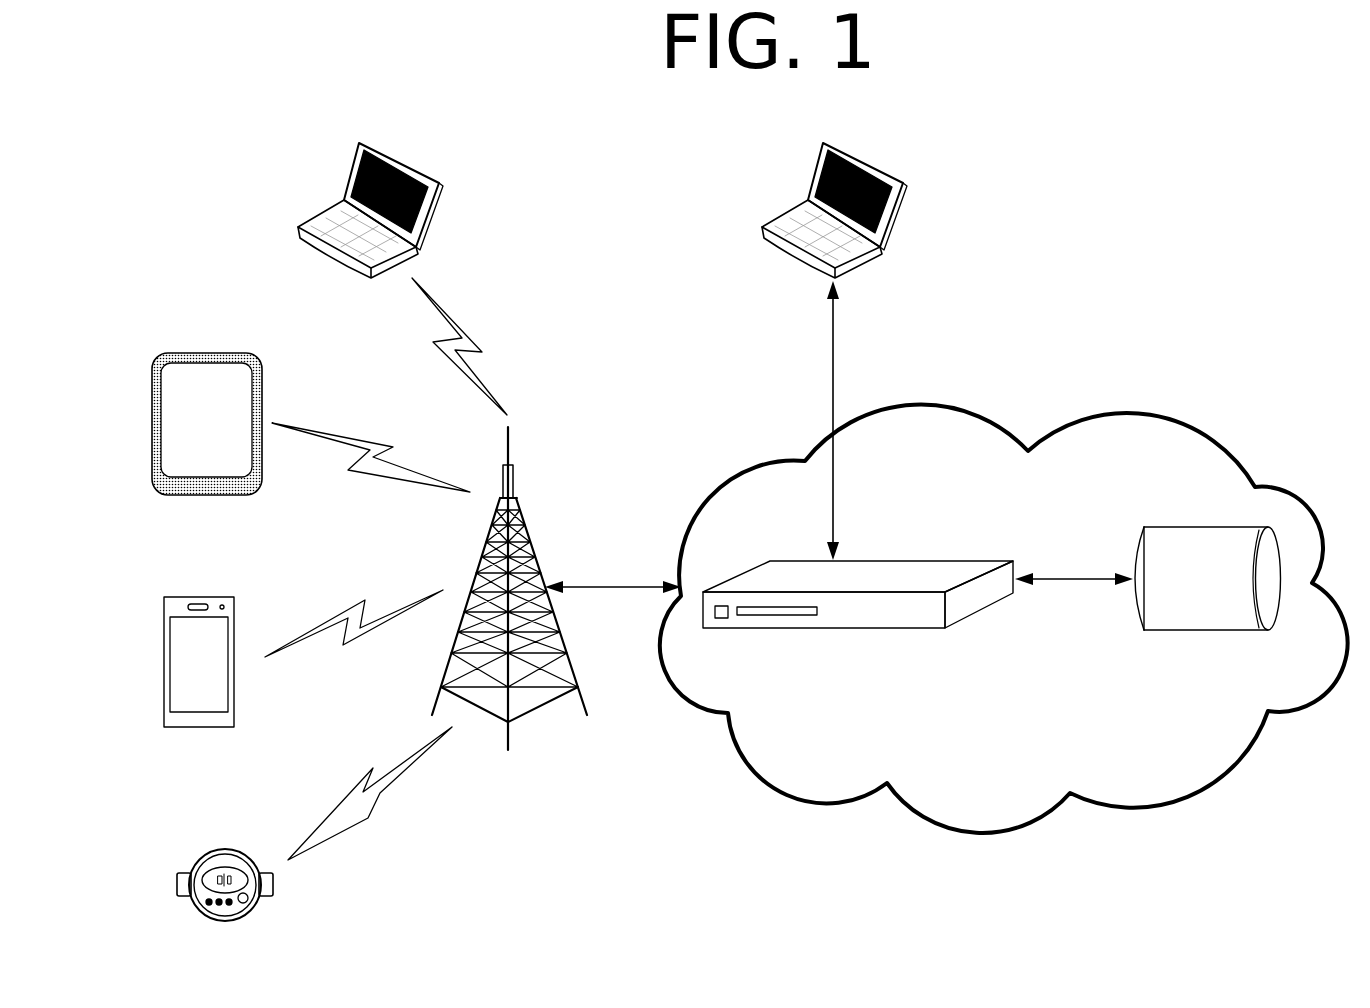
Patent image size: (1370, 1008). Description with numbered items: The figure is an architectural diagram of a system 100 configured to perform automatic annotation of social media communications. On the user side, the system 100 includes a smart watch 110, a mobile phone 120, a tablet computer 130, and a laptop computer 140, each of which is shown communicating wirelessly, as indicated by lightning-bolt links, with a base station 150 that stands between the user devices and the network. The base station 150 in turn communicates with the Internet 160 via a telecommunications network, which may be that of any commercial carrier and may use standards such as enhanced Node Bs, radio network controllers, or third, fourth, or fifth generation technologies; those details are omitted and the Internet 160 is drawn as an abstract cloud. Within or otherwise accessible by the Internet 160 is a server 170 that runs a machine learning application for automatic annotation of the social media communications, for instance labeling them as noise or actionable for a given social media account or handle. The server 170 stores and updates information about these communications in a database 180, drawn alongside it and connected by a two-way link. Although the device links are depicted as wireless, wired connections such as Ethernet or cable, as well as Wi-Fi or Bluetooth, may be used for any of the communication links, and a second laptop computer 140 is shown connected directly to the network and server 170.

The system 100 is at (266, 110).
The smart watch 110 is at (233, 845).
The mobile phone 120 is at (236, 609).
The tablet computer 130 is at (260, 380).
The laptop computer 140 is at (427, 227).
The base station 150 is at (533, 552).
The Internet 160 is at (765, 783).
The server 170 is at (860, 577).
The database 180 is at (1200, 627).